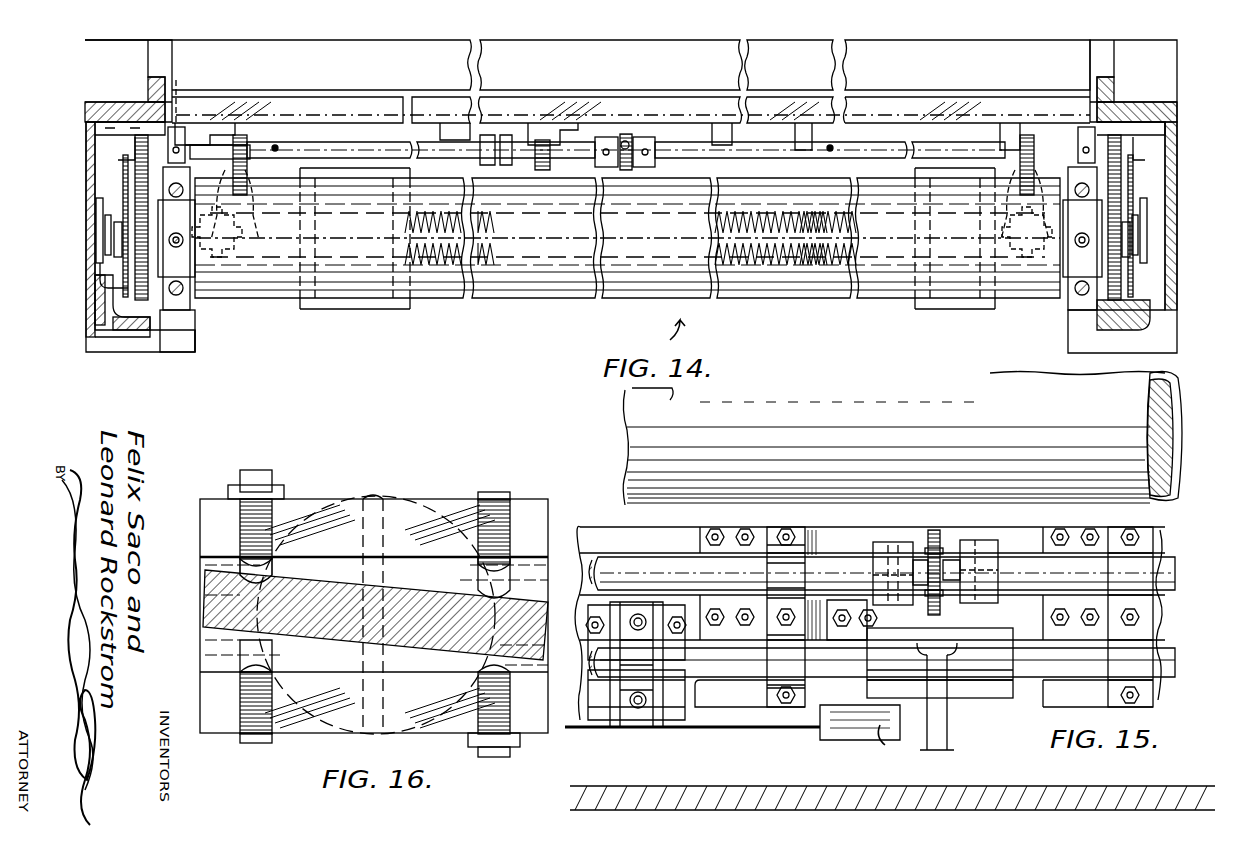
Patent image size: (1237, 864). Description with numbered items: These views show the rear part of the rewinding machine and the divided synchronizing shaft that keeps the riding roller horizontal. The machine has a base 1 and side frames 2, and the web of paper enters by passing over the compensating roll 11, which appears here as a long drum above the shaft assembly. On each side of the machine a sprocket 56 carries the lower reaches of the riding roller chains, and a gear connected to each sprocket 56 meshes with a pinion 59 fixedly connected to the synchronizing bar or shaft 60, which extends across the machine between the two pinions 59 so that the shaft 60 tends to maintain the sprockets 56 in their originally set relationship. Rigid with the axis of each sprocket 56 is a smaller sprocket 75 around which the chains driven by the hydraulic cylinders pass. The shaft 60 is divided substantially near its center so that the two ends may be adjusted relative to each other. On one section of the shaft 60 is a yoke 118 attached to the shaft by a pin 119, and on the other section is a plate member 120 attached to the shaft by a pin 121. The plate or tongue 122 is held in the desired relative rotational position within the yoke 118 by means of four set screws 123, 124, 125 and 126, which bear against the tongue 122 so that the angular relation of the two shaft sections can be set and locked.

In FIG. 15, the base 1 is at (1025, 700).
In FIG. 14, the side frame 2 is at (186, 342).
In FIG. 14, the compensating roll 11 is at (548, 299).
In FIG. 15, the compensating roll 11 is at (625, 460).
In FIG. 14, the sprocket 56 is at (128, 306).
In FIG. 14, the pinion 59 is at (135, 152).
In FIG. 14, the synchronizing bar or shaft 60 is at (552, 152).
In FIG. 15, the synchronizing bar or shaft 60 is at (668, 558).
In FIG. 16, the synchronizing bar or shaft 60 is at (424, 495).
In FIG. 14, the smaller sprocket 75 is at (123, 268).
In FIG. 14, the yoke 118 is at (620, 137).
In FIG. 15, the yoke 118 is at (930, 522).
In FIG. 16, the yoke 118 is at (326, 505).
In FIG. 14, the pin 119 is at (607, 137).
In FIG. 15, the pin 119 is at (888, 545).
In FIG. 16, the pin 119 is at (378, 498).
In FIG. 14, the plate member 120 is at (650, 137).
In FIG. 15, the plate member 120 is at (975, 600).
In FIG. 15, the pin 121 is at (985, 552).
In FIG. 15, the plate or tongue 122 is at (925, 605).
In FIG. 16, the plate or tongue 122 is at (205, 588).
In FIG. 14, the set screw 123 is at (632, 168).
In FIG. 15, the set screw 123 is at (935, 532).
In FIG. 16, the set screw 123 is at (262, 472).
In FIG. 14, the set screw 124 is at (633, 136).
In FIG. 16, the set screw 124 is at (518, 472).
In FIG. 15, the set screw 125 is at (950, 575).
In FIG. 16, the set screw 125 is at (248, 746).
In FIG. 16, the set screw 126 is at (490, 760).